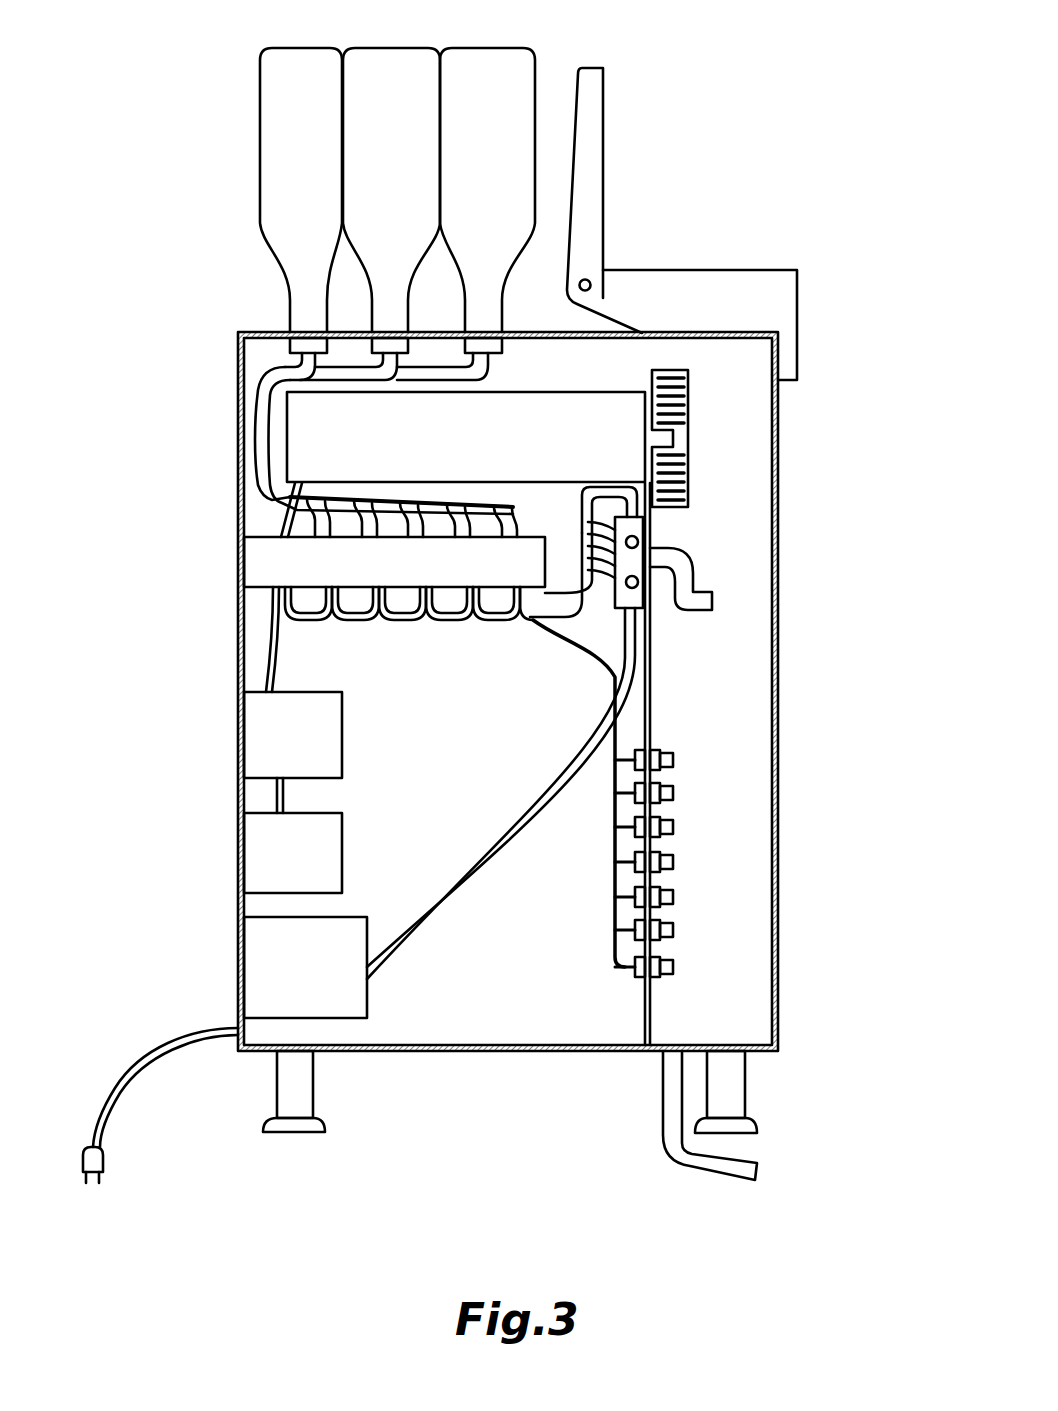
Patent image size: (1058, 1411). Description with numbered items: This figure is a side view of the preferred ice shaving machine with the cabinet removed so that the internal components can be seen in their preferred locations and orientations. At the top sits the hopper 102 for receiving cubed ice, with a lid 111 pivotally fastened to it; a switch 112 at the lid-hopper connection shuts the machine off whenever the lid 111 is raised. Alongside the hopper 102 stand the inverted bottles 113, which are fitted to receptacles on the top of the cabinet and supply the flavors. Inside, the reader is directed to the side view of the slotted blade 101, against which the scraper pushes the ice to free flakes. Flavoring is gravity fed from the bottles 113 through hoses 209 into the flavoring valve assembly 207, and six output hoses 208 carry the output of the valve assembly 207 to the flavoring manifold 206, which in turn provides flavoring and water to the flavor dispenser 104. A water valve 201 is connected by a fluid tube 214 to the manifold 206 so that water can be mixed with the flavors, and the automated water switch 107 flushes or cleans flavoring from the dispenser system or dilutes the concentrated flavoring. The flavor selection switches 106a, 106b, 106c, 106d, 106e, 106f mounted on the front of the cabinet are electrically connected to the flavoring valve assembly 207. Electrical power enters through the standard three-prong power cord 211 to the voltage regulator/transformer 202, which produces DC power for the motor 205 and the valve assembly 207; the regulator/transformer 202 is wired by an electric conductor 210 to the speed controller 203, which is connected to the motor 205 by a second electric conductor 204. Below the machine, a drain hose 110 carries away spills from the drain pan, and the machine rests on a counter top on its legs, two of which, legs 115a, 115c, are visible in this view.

The blade 101 is at (690, 483).
The hopper 102 is at (776, 308).
The flavor dispenser 104 is at (713, 600).
The flavor selection switch 106a is at (673, 758).
The flavor selection switch 106b is at (673, 791).
The flavor selection switch 106c is at (673, 825).
The flavor selection switch 106d is at (673, 860).
The flavor selection switch 106e is at (673, 895).
The flavor selection switch 106f is at (673, 928).
The automated water switch 107 is at (673, 965).
The drain hose 110 is at (667, 1112).
The lid 111 is at (598, 133).
The switch 112 is at (592, 281).
The inverted bottles 113 is at (512, 60).
The leg 115a is at (303, 1088).
The leg 115c is at (737, 1098).
The water valve 201 is at (267, 962).
The voltage regulator/transformer 202 is at (258, 848).
The speed controller 203 is at (260, 735).
The second electric conductor 204 is at (262, 643).
The motor 205 is at (307, 435).
The flavoring manifold 206 is at (660, 442).
The flavoring valve assembly 207 is at (263, 557).
The output hoses 208 is at (293, 617).
The hoses 209 is at (270, 370).
The electric conductor 210 is at (273, 793).
The power cord 211 is at (157, 1045).
The fluid tube 214 is at (635, 680).